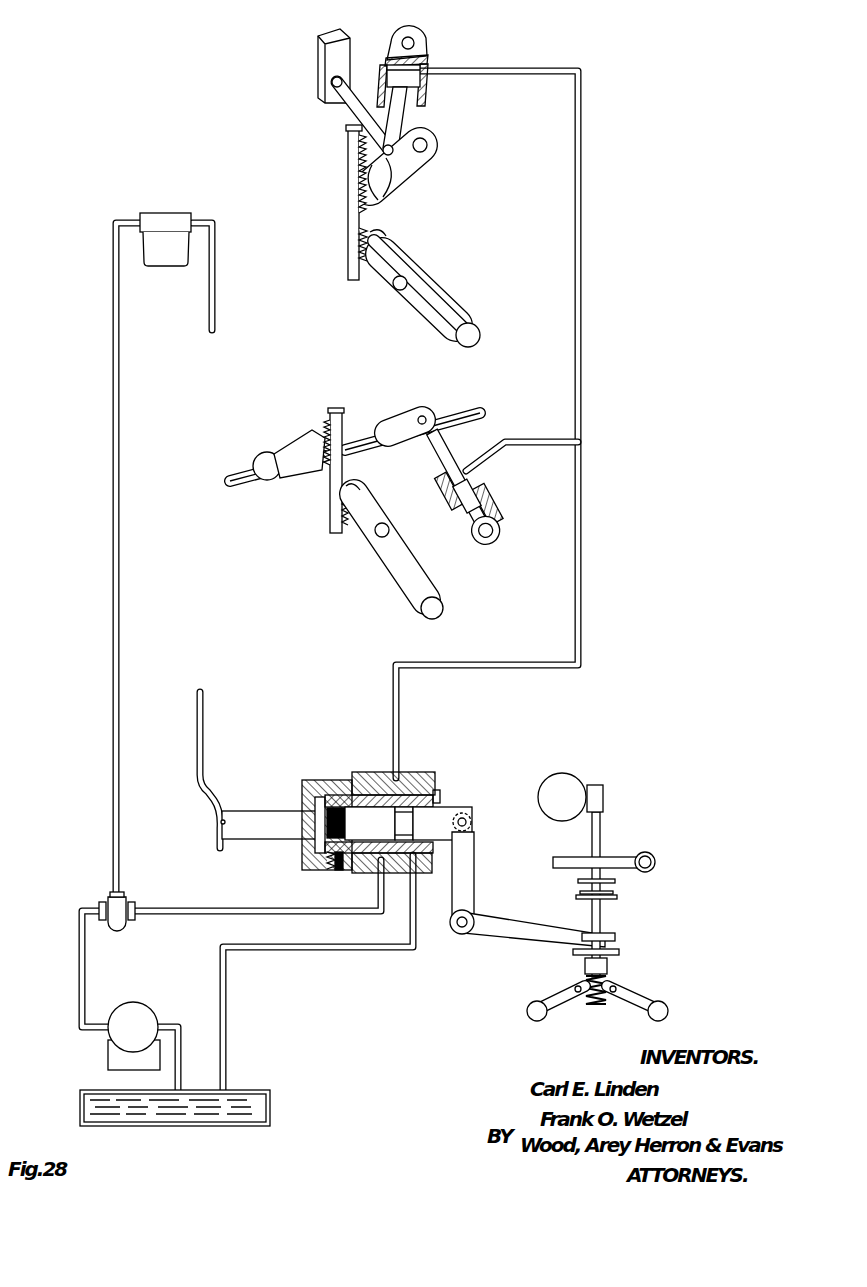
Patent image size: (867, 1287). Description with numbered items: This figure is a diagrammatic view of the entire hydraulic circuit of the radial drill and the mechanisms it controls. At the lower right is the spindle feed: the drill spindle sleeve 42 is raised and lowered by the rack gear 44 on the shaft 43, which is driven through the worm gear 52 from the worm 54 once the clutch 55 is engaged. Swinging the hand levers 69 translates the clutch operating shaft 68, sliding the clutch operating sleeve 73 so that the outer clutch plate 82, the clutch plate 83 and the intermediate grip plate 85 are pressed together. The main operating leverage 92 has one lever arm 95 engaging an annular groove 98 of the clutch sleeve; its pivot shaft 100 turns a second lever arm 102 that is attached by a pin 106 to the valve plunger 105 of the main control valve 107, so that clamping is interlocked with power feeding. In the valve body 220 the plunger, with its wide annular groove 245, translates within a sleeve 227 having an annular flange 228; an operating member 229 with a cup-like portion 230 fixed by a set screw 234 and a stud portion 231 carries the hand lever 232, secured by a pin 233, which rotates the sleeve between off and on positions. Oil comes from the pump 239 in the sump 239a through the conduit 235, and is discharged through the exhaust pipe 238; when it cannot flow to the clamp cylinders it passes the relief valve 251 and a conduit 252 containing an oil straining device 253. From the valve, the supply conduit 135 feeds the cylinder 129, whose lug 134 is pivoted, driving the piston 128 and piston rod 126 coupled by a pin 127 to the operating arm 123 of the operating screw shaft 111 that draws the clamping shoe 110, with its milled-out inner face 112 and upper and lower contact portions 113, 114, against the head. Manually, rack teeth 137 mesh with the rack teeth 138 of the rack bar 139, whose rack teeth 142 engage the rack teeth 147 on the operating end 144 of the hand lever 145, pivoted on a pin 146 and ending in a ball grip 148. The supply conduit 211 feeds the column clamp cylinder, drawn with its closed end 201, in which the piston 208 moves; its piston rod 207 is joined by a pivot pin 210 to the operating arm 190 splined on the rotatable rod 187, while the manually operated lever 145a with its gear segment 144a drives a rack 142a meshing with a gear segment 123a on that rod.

The drill spindle sleeve 42 is at (568, 785).
The shaft 43 is at (601, 912).
The rack gear 44 is at (603, 798).
The worm gear 52 is at (612, 857).
The worm 54 is at (652, 855).
The clutch 55 is at (578, 890).
The clutch operating shaft 68 is at (606, 968).
The clutch control and spindle feeding hand levers 69 is at (555, 996).
The clutch operating sleeve 73 is at (616, 935).
The outer clutch plate 82 is at (590, 896).
The clutch plate 83 is at (615, 881).
The intermediate grip plate 85 is at (617, 893).
The main operating leverage 92 is at (522, 924).
The lever arm 95 is at (495, 932).
The annular groove 98 is at (620, 950).
The pivot shaft 100 is at (460, 934).
The second lever arm 102 is at (466, 880).
The valve plunger 105 is at (372, 820).
The pin 106 is at (467, 823).
The main control valve 107 is at (362, 776).
The clamping shoe 110 is at (326, 76).
The operating screw shaft 111 is at (352, 104).
The milled-out inner face 112 is at (332, 84).
The upper contact portion 113 is at (320, 47).
The lower contact portion 114 is at (330, 100).
The operating arm 123 is at (380, 178).
The gear segment 123a is at (318, 447).
The piston rod 126 is at (404, 112).
The pin 127 is at (405, 163).
The piston 128 is at (410, 80).
The cylinder 129 is at (427, 85).
The lug 134 is at (418, 50).
The supply conduit 135 is at (504, 71).
The rack teeth 137 is at (385, 195).
The rack teeth 138 is at (356, 181).
The rack bar 139 is at (349, 207).
The rack teeth 142 is at (356, 233).
The rack 142a is at (338, 505).
The operating end 144 is at (395, 262).
The gear segment 144a is at (348, 510).
The hand lever 145 is at (436, 302).
The manually operated lever 145a is at (396, 555).
The pin 146 is at (408, 280).
The rack teeth 147 is at (380, 236).
The ball grip 148 is at (474, 328).
The rotatable rod 187 is at (358, 440).
The operating arm 190 is at (410, 418).
The cylinder end 201 is at (498, 527).
The piston rod 207 is at (448, 448).
The piston 208 is at (468, 483).
The pivot pin 210 is at (428, 417).
The supply conduit 211 is at (540, 442).
The valve body 220 is at (440, 782).
The sleeve 227 is at (420, 796).
The annular flange 228 is at (440, 795).
The operating member 229 is at (308, 845).
The cup-like portion 230 is at (336, 865).
The stud portion 231 is at (262, 830).
The hand lever 232 is at (206, 760).
The pin 233 is at (222, 826).
The set screw 234 is at (334, 873).
The conduit 235 is at (264, 910).
The exhaust pipe 238 is at (302, 948).
The pump 239 is at (142, 1015).
The sump 239a is at (246, 1090).
The annular groove 245 is at (406, 812).
The relief valve 251 is at (120, 908).
The conduit 252 is at (119, 392).
The oil straining device 253 is at (171, 220).